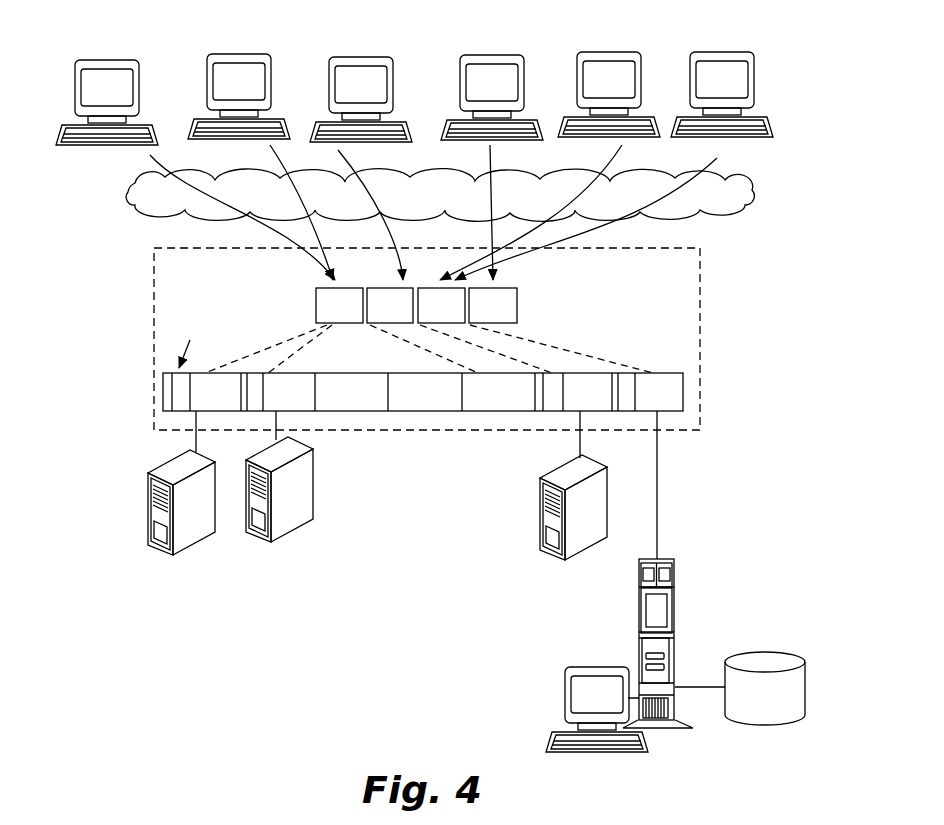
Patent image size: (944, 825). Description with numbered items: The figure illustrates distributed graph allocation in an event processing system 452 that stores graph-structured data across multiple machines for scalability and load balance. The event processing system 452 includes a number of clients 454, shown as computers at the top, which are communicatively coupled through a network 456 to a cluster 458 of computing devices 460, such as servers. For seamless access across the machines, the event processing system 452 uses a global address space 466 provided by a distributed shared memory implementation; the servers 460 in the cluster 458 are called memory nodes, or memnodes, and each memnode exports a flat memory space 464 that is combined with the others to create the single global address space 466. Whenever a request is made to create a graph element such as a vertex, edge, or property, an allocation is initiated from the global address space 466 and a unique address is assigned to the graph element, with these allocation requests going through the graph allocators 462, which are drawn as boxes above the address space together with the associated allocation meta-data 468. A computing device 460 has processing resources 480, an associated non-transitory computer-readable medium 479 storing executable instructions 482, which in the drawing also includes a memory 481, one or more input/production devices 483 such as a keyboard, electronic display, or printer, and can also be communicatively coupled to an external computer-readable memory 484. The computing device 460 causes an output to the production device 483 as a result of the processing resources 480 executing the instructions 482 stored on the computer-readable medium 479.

The event processing system 452 is at (806, 78).
The clients 454 is at (341, 56).
The network 456 is at (752, 196).
The cluster 458 is at (700, 322).
The computing devices 460 is at (181, 556).
The graph allocators 462 is at (517, 292).
The flat memory space 464 is at (683, 390).
The global address space 466 is at (365, 411).
The allocation meta-data 468 is at (170, 371).
The non-transitory computer-readable medium 479 is at (659, 643).
The processing resources 480 is at (641, 573).
The memory 481 is at (641, 595).
The executable instructions 482 is at (641, 612).
The input/production devices 483 is at (565, 692).
The external computer-readable memory 484 is at (768, 655).